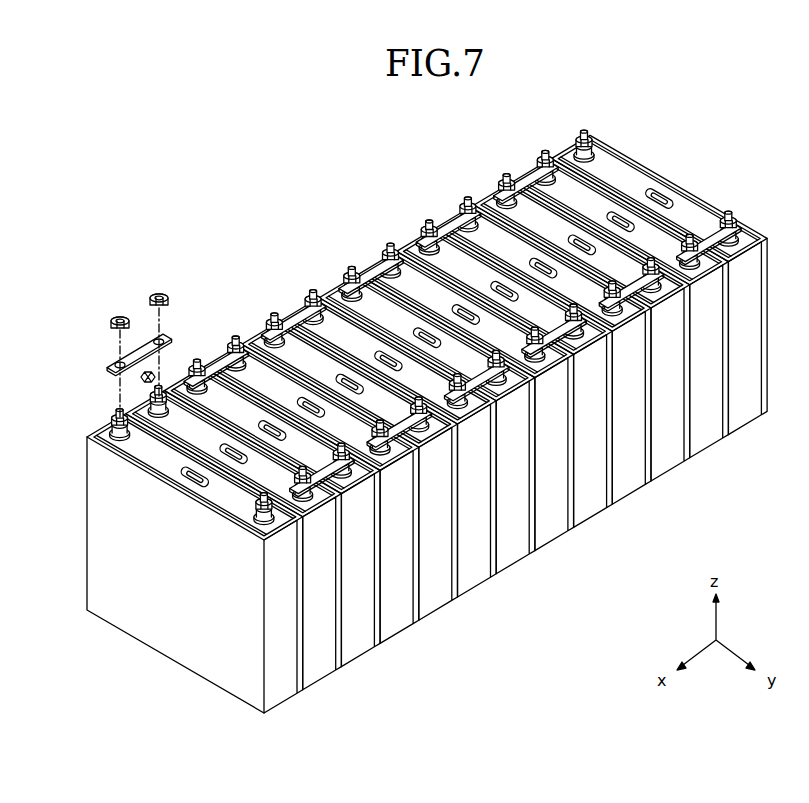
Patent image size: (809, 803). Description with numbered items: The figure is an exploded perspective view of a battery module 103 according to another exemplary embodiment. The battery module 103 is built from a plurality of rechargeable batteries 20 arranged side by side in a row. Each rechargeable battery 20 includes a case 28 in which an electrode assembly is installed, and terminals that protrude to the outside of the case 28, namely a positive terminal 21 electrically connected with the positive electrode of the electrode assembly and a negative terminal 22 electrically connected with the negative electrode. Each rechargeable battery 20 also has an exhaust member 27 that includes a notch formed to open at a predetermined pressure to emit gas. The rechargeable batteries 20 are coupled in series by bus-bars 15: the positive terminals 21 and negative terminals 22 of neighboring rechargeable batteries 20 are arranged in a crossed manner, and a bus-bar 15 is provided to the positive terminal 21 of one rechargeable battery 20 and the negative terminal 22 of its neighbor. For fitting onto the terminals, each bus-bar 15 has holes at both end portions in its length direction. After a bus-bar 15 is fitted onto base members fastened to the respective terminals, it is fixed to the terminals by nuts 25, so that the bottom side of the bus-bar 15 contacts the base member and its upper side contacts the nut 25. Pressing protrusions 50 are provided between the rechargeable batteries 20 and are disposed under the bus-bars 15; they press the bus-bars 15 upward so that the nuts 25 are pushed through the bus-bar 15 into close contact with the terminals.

The battery module 103 is at (316, 195).
The bus-bar 15 is at (146, 352).
The rechargeable battery 20 is at (228, 599).
The positive terminal 21 is at (116, 418).
The negative terminal 22 is at (121, 394).
The nut 25 is at (113, 319).
The exhaust member 27 is at (303, 309).
The case 28 is at (283, 612).
The pressing protrusion 50 is at (156, 372).